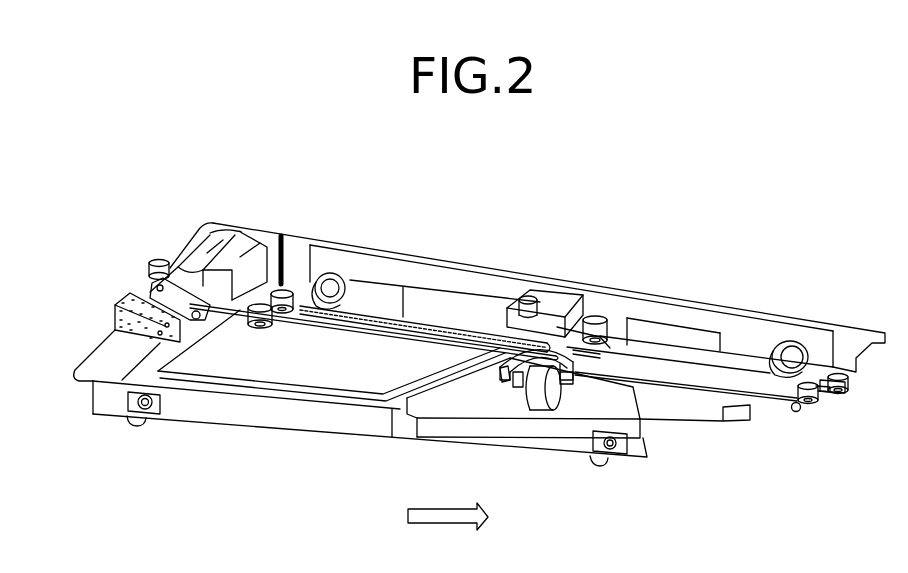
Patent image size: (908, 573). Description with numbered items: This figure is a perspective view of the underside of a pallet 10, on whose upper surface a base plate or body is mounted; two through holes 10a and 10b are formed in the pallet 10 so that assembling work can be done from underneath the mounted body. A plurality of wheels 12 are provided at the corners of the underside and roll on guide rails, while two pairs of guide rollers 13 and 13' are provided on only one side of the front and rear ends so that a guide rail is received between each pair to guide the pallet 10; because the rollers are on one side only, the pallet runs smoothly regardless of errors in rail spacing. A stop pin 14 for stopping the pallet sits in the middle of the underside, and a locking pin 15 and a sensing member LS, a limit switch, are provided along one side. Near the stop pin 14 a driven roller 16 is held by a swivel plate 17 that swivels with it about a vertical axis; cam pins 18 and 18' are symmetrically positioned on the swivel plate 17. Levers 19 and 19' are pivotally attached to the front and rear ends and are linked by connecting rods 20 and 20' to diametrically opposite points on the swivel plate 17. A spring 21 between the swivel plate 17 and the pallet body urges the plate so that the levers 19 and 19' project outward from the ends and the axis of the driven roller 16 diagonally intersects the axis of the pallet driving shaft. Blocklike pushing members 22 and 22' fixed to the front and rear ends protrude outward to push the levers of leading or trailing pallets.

The pallet 10 is at (386, 245).
The through hole 10a is at (317, 370).
The through hole 10b is at (570, 415).
The wheel 12 is at (325, 278).
The guide roller 13 is at (586, 346).
The guide roller 13' is at (558, 380).
The stop pin 14 is at (512, 378).
The locking pin 15 is at (597, 320).
The driven roller 16 is at (540, 392).
The swivel plate 17 is at (598, 352).
The cam pin 18 is at (567, 381).
The cam pin 18' is at (486, 421).
The lever 19 is at (811, 420).
The lever 19' is at (145, 289).
The connecting rod 20 is at (682, 402).
The connecting rod 20' is at (374, 335).
The spring 21 is at (465, 306).
The pushing member 22 is at (857, 405).
The pushing member 22' is at (117, 317).
The sensing member LS is at (553, 300).